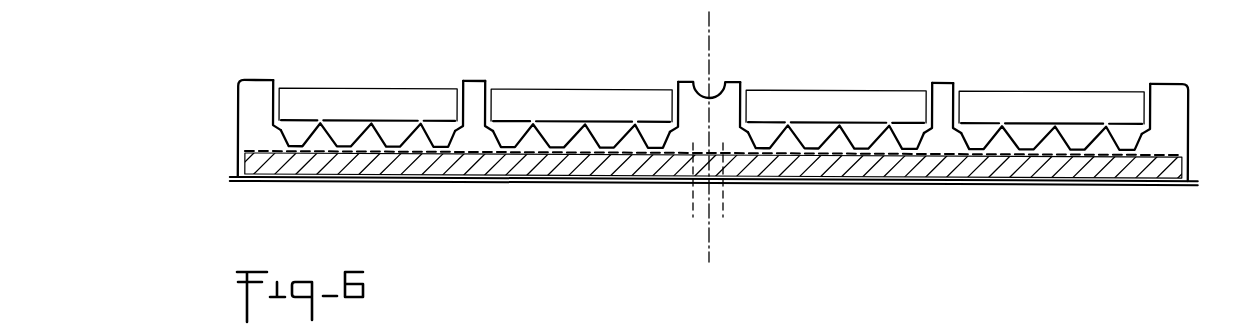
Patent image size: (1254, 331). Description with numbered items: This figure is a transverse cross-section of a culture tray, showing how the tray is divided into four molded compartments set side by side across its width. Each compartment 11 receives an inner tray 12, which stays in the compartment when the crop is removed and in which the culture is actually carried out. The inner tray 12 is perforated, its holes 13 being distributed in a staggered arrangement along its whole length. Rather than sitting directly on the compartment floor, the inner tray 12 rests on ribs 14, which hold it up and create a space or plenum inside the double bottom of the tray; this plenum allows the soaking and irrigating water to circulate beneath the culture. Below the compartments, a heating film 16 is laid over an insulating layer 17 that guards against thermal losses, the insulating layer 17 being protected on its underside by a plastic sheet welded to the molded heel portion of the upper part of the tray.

The compartment 11 is at (335, 98).
The inner tray 12 is at (672, 108).
The holes 13 is at (417, 121).
The ribs 14 is at (383, 138).
The heating film 16 is at (257, 151).
The insulating layer 17 is at (275, 163).